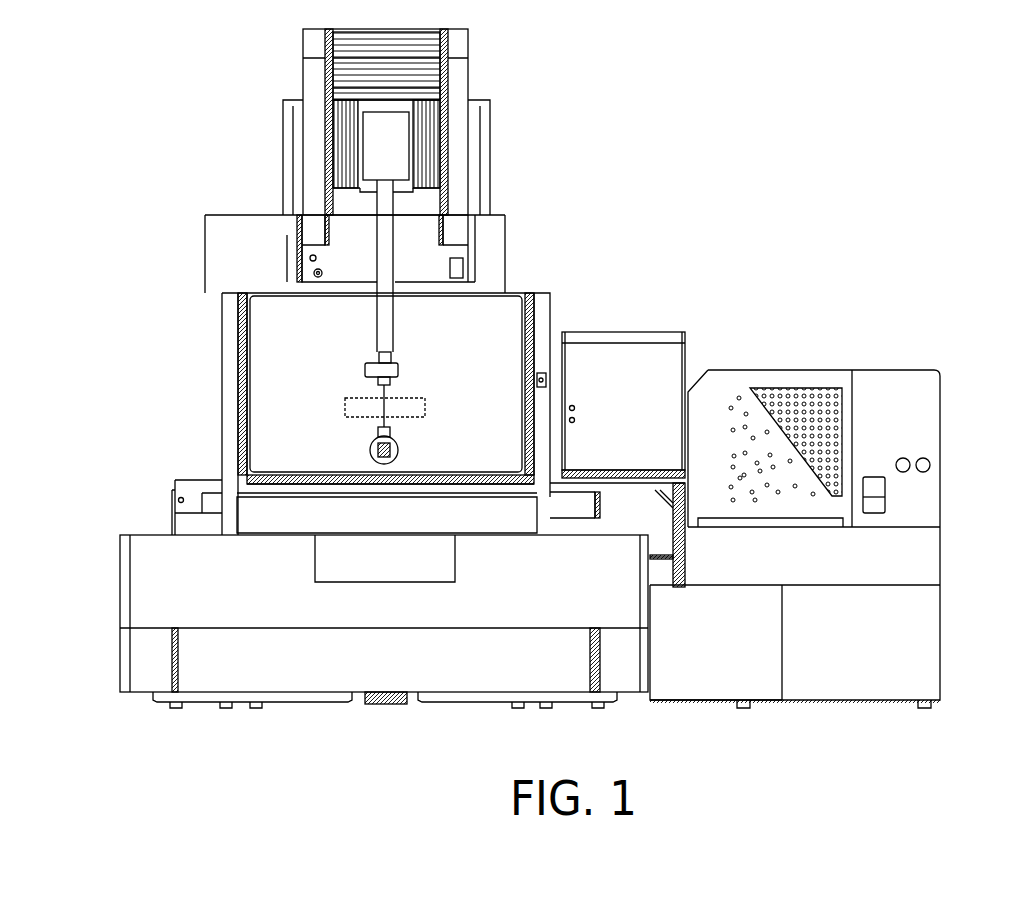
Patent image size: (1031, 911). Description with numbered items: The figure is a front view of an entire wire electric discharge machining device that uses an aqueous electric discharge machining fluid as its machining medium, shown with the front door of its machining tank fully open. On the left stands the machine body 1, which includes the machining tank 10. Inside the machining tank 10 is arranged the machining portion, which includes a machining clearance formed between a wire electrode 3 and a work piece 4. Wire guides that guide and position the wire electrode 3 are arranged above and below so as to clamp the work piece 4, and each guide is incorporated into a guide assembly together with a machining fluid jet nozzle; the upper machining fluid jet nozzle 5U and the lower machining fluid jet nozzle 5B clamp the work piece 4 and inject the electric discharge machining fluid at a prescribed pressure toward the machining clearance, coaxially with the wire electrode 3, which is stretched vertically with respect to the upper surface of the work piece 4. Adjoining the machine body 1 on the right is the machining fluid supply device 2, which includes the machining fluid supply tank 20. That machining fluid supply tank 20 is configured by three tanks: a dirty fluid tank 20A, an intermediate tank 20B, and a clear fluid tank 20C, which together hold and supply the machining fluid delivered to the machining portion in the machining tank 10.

The machine body 1 is at (540, 98).
The machining tank 10 is at (541, 292).
The machining fluid supply device 2 is at (914, 358).
The machining fluid supply tank 20 is at (898, 554).
The dirty fluid tank 20A is at (758, 694).
The intermediate tank 20B is at (937, 647).
The clear fluid tank 20C is at (943, 556).
The wire electrode 3 is at (392, 423).
The work piece 4 is at (420, 397).
The machining fluid jet nozzle 5U is at (396, 382).
The machining fluid jet nozzle 5B is at (383, 430).